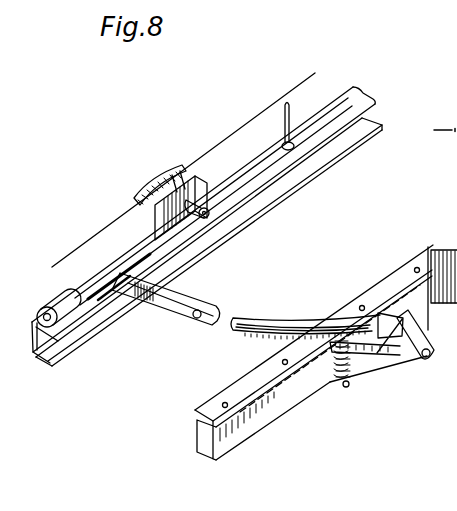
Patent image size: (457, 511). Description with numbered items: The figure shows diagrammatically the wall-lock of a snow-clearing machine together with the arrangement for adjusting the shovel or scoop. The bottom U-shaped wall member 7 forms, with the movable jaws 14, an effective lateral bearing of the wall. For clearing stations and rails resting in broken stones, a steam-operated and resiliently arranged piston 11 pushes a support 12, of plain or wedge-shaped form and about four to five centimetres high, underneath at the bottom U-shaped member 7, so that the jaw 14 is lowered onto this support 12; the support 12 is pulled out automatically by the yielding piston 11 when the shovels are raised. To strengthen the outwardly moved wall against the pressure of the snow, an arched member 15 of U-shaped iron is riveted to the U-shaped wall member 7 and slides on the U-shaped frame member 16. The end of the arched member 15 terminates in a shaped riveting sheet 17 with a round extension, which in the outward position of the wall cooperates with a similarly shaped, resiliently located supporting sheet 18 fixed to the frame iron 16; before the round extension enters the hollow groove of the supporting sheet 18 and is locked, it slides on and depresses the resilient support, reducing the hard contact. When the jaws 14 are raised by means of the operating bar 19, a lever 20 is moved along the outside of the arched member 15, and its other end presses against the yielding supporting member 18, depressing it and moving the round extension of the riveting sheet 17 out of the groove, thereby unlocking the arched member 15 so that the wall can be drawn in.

The U-shaped wall member 7 is at (50, 365).
The piston 11 is at (58, 298).
The support 12 is at (167, 265).
The jaw 14 is at (197, 178).
The arched member 15 is at (183, 319).
The U-shaped frame member 16 is at (444, 241).
The riveting sheet 17 is at (402, 370).
The supporting sheet 18 is at (380, 363).
The operating bar 19 is at (258, 152).
The lever 20 is at (255, 331).